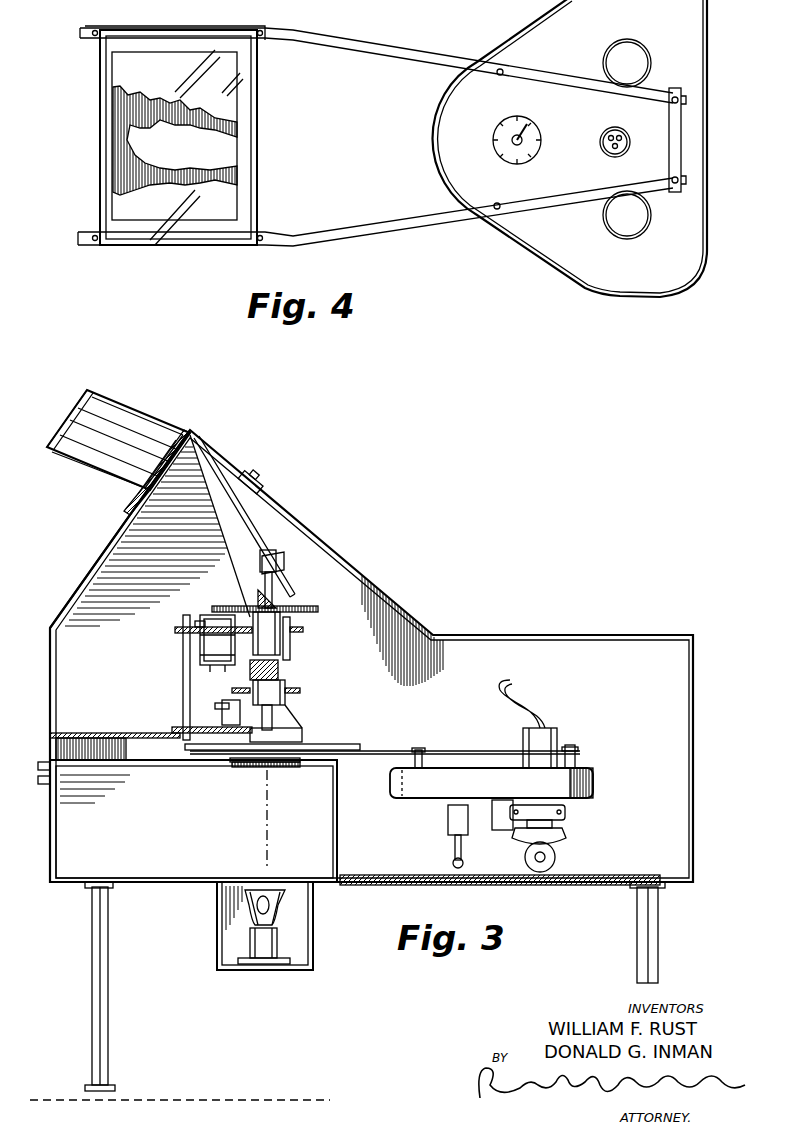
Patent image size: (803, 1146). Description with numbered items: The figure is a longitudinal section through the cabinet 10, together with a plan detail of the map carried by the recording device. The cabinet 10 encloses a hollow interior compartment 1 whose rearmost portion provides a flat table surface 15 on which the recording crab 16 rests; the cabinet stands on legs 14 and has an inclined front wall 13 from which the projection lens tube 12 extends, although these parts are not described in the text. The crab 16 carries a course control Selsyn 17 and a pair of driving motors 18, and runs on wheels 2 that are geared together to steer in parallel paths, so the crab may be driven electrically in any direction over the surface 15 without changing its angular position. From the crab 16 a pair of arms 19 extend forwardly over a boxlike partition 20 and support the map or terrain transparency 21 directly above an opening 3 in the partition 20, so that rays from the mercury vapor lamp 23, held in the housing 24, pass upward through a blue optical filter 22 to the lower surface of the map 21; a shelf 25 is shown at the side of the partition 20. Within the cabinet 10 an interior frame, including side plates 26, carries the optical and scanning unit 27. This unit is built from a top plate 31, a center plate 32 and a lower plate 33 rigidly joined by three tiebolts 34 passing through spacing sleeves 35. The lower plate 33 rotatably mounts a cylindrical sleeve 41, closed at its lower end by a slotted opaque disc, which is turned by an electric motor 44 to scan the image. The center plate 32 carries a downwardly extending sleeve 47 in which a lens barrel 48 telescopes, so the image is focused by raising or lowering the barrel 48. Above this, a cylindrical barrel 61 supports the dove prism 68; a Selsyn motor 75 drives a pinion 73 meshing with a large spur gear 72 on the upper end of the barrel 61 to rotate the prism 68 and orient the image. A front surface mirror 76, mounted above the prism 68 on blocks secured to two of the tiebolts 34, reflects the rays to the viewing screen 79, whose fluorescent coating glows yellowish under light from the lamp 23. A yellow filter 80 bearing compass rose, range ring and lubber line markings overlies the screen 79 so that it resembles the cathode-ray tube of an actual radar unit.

In FIG. 3, the hollow interior compartment 1 is at (619, 688).
In FIG. 3, the wheels 2 is at (455, 864).
In FIG. 3, the opening 3 is at (260, 768).
In FIG. 3, the cabinet 10 is at (590, 629).
In FIG. 3, the projection lens tube 12 is at (108, 400).
In FIG. 3, the inclined front wall 13 is at (107, 549).
In FIG. 3, the supporting legs 14 is at (92, 1010).
In FIG. 3, the flat table surface 15 is at (630, 875).
In FIG. 4, the recording crab 16 is at (543, 28).
In FIG. 3, the recording crab 16 is at (415, 790).
In FIG. 3, the course control Selsyn 17 is at (505, 828).
In FIG. 3, the driving motors 18 is at (558, 828).
In FIG. 4, the arms 19 is at (414, 52).
In FIG. 3, the arms 19 is at (381, 752).
In FIG. 3, the boxlike partition 20 is at (184, 767).
In FIG. 4, the map or terrain transparency 21 is at (243, 105).
In FIG. 3, the map or terrain transparency 21 is at (320, 744).
In FIG. 3, the blue optical filter 22 is at (280, 770).
In FIG. 3, the mercury vapor lamp 23 is at (250, 898).
In FIG. 3, the housing 24 is at (313, 935).
In FIG. 3, the shelf 25 is at (106, 729).
In FIG. 3, the side plates 26 is at (72, 676).
In FIG. 3, the optical and scanning unit 27 is at (330, 625).
In FIG. 3, the top plate 31 is at (174, 630).
In FIG. 3, the center plate 32 is at (305, 690).
In FIG. 3, the lower plate 33 is at (173, 730).
In FIG. 3, the tiebolts 34 is at (198, 621).
In FIG. 3, the spacing sleeves 35 is at (185, 684).
In FIG. 3, the cylindrical sleeve 41 is at (290, 735).
In FIG. 3, the electric motor 44 is at (225, 716).
In FIG. 3, the sleeve 47 is at (288, 697).
In FIG. 3, the lens barrel 48 is at (250, 678).
In FIG. 3, the cylindrical barrel 61 is at (286, 645).
In FIG. 3, the dove prism 68 is at (258, 600).
In FIG. 3, the spur gear 72 is at (305, 606).
In FIG. 3, the pinion 73 is at (252, 598).
In FIG. 3, the Selsyn motor 75 is at (210, 648).
In FIG. 3, the front surface mirror 76 is at (246, 516).
In FIG. 3, the viewing screen 79 is at (152, 505).
In FIG. 3, the yellow filter 80 is at (140, 492).